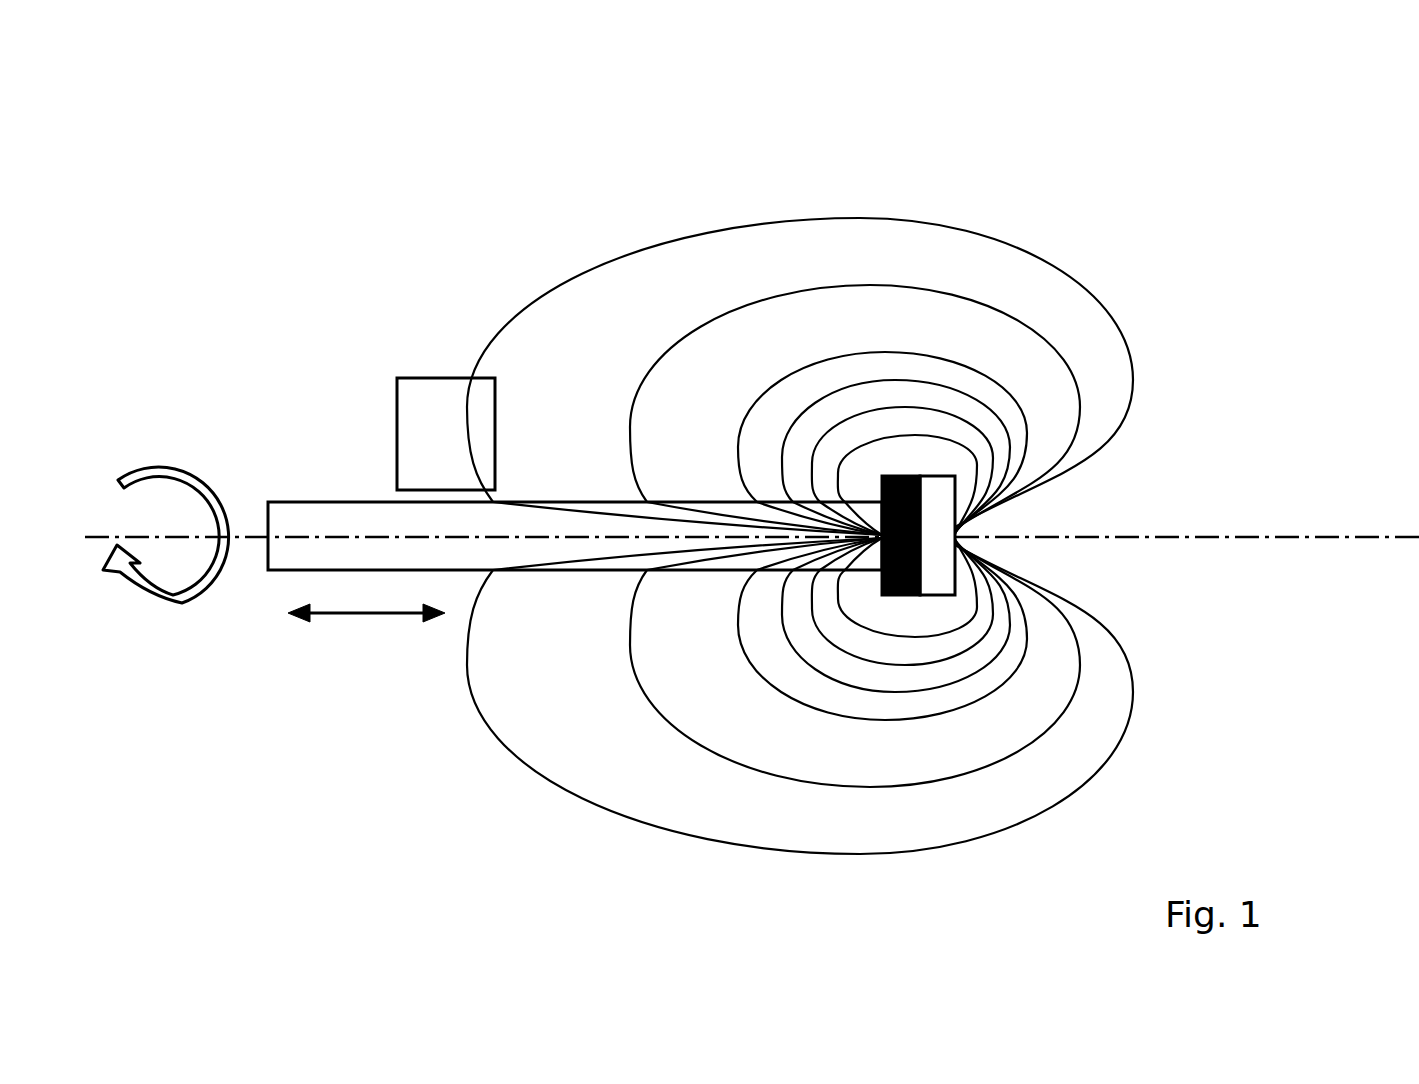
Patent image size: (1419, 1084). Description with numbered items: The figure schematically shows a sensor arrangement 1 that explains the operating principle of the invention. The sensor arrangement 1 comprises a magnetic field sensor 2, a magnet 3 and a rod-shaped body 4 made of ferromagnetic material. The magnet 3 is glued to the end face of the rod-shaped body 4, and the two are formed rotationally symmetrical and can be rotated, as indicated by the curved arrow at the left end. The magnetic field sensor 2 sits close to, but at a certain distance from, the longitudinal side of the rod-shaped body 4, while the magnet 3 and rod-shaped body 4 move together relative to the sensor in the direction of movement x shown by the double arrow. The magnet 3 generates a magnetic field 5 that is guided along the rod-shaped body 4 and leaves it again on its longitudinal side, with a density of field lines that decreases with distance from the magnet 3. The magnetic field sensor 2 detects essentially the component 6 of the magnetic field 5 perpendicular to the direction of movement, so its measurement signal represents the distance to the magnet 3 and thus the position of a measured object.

The sensor arrangement 1 is at (1183, 243).
The magnetic field sensor 2 is at (397, 453).
The magnet 3 is at (940, 502).
The rod-shaped body 4 is at (285, 555).
The magnetic field 5 is at (903, 283).
The component of the magnetic field perpendicular to the direction of movement 6 is at (465, 425).